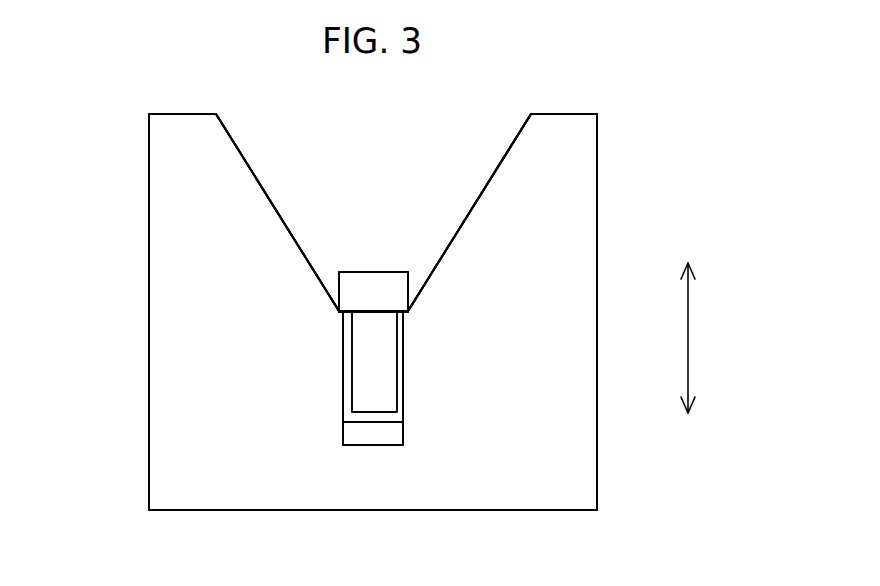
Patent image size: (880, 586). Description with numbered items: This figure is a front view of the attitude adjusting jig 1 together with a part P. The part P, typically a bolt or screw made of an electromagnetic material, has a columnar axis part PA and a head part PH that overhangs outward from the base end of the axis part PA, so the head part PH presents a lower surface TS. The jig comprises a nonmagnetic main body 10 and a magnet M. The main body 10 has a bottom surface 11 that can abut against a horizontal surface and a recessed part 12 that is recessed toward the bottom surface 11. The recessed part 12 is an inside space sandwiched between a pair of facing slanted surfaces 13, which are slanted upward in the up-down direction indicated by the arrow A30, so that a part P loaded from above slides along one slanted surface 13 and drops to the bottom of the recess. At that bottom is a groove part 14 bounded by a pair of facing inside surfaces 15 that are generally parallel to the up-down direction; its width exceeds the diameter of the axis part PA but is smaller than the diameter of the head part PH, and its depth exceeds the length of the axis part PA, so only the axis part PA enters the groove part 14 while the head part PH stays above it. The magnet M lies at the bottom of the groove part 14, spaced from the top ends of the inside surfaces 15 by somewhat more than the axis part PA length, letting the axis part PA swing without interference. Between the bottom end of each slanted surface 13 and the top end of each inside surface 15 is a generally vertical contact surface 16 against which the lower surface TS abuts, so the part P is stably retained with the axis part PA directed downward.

The attitude adjusting jig 1 is at (74, 164).
The main body 10 is at (577, 192).
The bottom surface 11 is at (517, 510).
The recessed part 12 is at (455, 146).
The slanted surfaces 13 is at (479, 200).
The groove part 14 is at (412, 348).
The inside surfaces 15 is at (343, 397).
The contact surface 16 is at (339, 310).
The part P is at (372, 259).
The head part PH is at (363, 300).
The axis part PA is at (383, 380).
The lower surface TS is at (343, 316).
The magnet M is at (353, 432).
The up-down direction arrow A30 is at (688, 337).